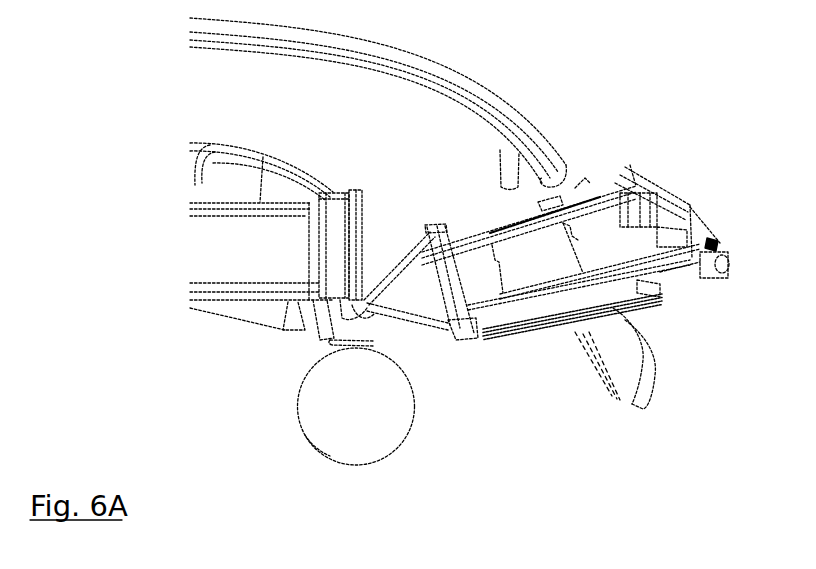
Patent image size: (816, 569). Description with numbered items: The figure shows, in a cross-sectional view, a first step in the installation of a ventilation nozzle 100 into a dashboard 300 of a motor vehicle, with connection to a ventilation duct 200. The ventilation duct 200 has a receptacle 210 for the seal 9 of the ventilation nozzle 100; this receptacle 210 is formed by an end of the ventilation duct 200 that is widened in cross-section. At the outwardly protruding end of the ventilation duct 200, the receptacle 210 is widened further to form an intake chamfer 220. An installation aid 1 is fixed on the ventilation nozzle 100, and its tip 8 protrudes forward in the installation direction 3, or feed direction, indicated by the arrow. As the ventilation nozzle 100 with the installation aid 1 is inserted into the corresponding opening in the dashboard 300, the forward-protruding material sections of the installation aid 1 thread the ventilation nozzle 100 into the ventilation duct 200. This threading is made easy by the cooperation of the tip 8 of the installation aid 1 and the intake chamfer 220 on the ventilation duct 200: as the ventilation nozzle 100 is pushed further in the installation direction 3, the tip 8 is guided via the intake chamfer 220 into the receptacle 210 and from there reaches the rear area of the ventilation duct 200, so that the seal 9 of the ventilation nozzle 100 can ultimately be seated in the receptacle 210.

The installation aid 1 is at (430, 333).
The installation direction 3 is at (463, 192).
The tip 8 is at (372, 315).
The seal 9 is at (467, 340).
The ventilation nozzle 100 is at (564, 218).
The ventilation duct 200 is at (223, 292).
The receptacle 210 is at (332, 193).
The intake chamfer 220 is at (361, 193).
The dashboard 300 is at (323, 51).